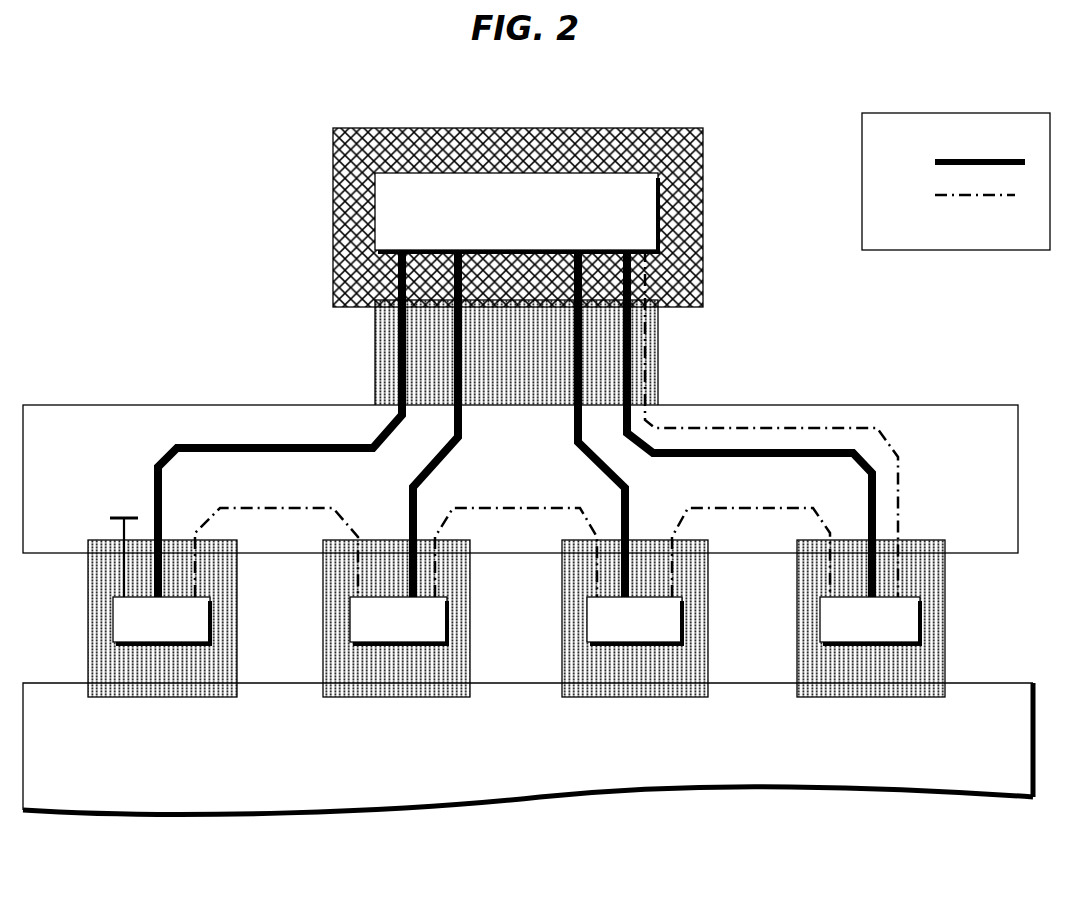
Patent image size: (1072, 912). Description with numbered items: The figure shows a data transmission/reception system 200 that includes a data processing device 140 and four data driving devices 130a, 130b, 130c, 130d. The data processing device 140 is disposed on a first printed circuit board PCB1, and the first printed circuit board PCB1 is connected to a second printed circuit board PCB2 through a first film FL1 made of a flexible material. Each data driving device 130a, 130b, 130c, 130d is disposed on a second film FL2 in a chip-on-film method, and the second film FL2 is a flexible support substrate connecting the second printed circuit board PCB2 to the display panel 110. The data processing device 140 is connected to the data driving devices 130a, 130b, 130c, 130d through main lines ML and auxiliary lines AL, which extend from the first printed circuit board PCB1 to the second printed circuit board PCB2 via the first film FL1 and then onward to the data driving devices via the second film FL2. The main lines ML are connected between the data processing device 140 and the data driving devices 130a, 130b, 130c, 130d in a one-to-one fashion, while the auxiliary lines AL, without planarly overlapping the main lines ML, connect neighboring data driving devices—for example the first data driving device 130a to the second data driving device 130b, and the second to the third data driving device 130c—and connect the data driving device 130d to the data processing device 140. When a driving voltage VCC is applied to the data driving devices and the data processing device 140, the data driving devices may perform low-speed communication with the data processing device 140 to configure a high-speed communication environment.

The data transmission/reception system 200 is at (906, 86).
The data processing device 140 is at (496, 226).
The first data driving device 130a is at (136, 631).
The second data driving device 130b is at (373, 631).
The third data driving device 130c is at (609, 631).
The data driving device 130d is at (845, 631).
The display panel 110 is at (790, 792).
The first printed circuit board PCB1 is at (703, 208).
The second printed circuit board PCB2 is at (943, 405).
The first film FL1 is at (658, 347).
The second film FL2 is at (945, 612).
The main line ML is at (591, 374).
The auxiliary line AL is at (605, 391).
The driving voltage VCC is at (121, 543).